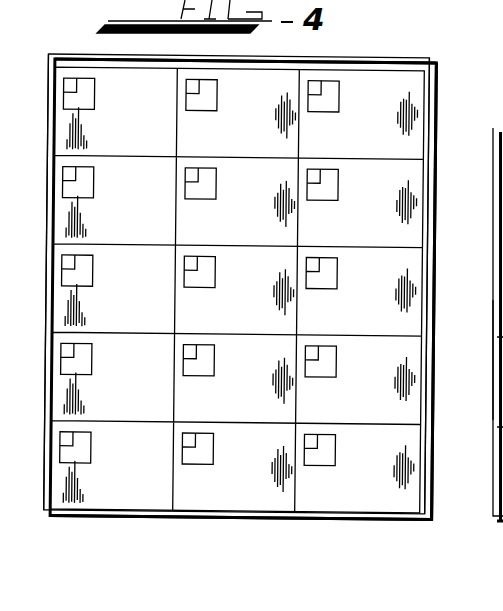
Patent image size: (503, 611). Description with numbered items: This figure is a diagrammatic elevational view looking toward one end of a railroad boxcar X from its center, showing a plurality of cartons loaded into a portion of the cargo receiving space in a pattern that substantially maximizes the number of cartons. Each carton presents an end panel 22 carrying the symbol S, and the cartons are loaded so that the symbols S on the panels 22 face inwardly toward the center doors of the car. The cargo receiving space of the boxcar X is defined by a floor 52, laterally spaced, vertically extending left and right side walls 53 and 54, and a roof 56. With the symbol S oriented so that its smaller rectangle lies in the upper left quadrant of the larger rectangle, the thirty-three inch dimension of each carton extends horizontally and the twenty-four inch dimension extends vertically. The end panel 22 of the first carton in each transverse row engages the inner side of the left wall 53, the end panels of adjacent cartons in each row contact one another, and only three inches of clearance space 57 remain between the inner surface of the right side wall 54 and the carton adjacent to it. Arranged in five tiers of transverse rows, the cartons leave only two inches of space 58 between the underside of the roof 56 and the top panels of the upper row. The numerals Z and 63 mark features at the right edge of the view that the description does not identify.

The panel 22 is at (132, 140).
The symbol S is at (92, 99).
The boxcar X is at (437, 83).
The adjacent panel Z is at (495, 112).
The floor 52 is at (243, 519).
The left side wall 53 is at (46, 303).
The right side wall 54 is at (434, 305).
The roof 56 is at (373, 61).
The clearance space 57 is at (427, 450).
The space 58 is at (88, 62).
The adjacent panel edge 63 is at (493, 362).